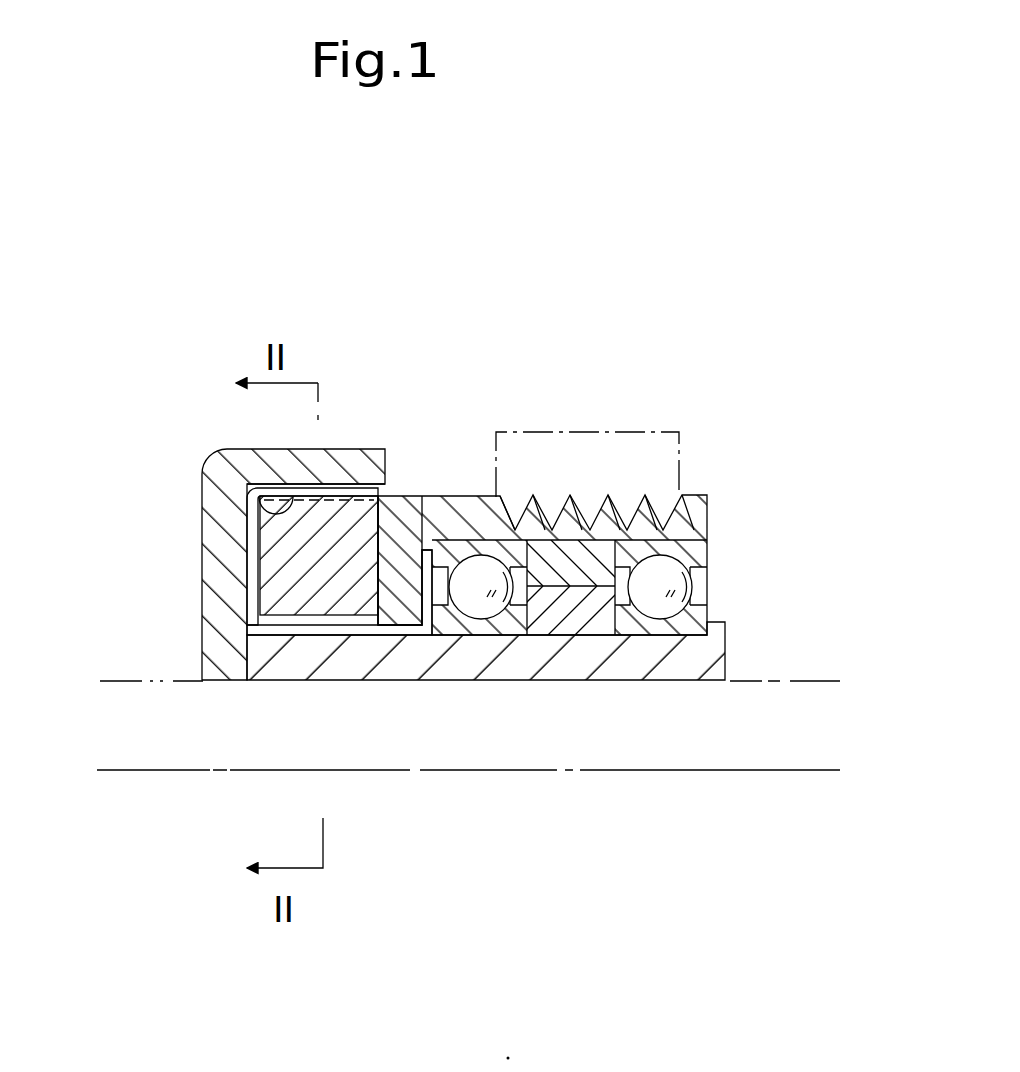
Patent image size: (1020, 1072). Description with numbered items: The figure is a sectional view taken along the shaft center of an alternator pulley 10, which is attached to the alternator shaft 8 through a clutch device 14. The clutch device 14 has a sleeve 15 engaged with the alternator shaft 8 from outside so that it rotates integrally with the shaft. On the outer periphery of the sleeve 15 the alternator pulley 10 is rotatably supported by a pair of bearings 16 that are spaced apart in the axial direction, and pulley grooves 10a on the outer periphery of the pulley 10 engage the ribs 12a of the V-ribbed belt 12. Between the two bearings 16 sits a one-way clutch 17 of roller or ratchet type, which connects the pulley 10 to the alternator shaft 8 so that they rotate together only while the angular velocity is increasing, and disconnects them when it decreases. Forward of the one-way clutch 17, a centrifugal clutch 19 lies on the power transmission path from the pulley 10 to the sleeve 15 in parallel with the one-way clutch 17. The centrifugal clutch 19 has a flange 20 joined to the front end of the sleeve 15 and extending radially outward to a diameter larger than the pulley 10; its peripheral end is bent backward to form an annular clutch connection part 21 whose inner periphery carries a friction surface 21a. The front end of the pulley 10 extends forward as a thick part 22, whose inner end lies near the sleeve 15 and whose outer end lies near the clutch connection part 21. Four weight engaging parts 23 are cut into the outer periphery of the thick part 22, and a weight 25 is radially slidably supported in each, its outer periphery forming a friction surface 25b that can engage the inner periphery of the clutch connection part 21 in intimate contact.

The alternator shaft 8 is at (818, 678).
The alternator pulley 10 is at (712, 502).
The pulley grooves 10a is at (630, 497).
The V-ribbed belt 12 is at (520, 432).
The ribs 12a is at (480, 505).
The clutch device 14 is at (611, 714).
The sleeve 15 is at (722, 657).
The bearings 16 is at (708, 549).
The one-way clutch 17 is at (572, 642).
The centrifugal clutch 19 is at (353, 618).
The flange 20 is at (202, 540).
The clutch connection part 21 is at (320, 492).
The friction surface 21a is at (258, 505).
The thick part 22 is at (413, 505).
The weight engaging parts 23 is at (377, 537).
The weight 25 is at (272, 583).
The friction surface 25b is at (292, 460).